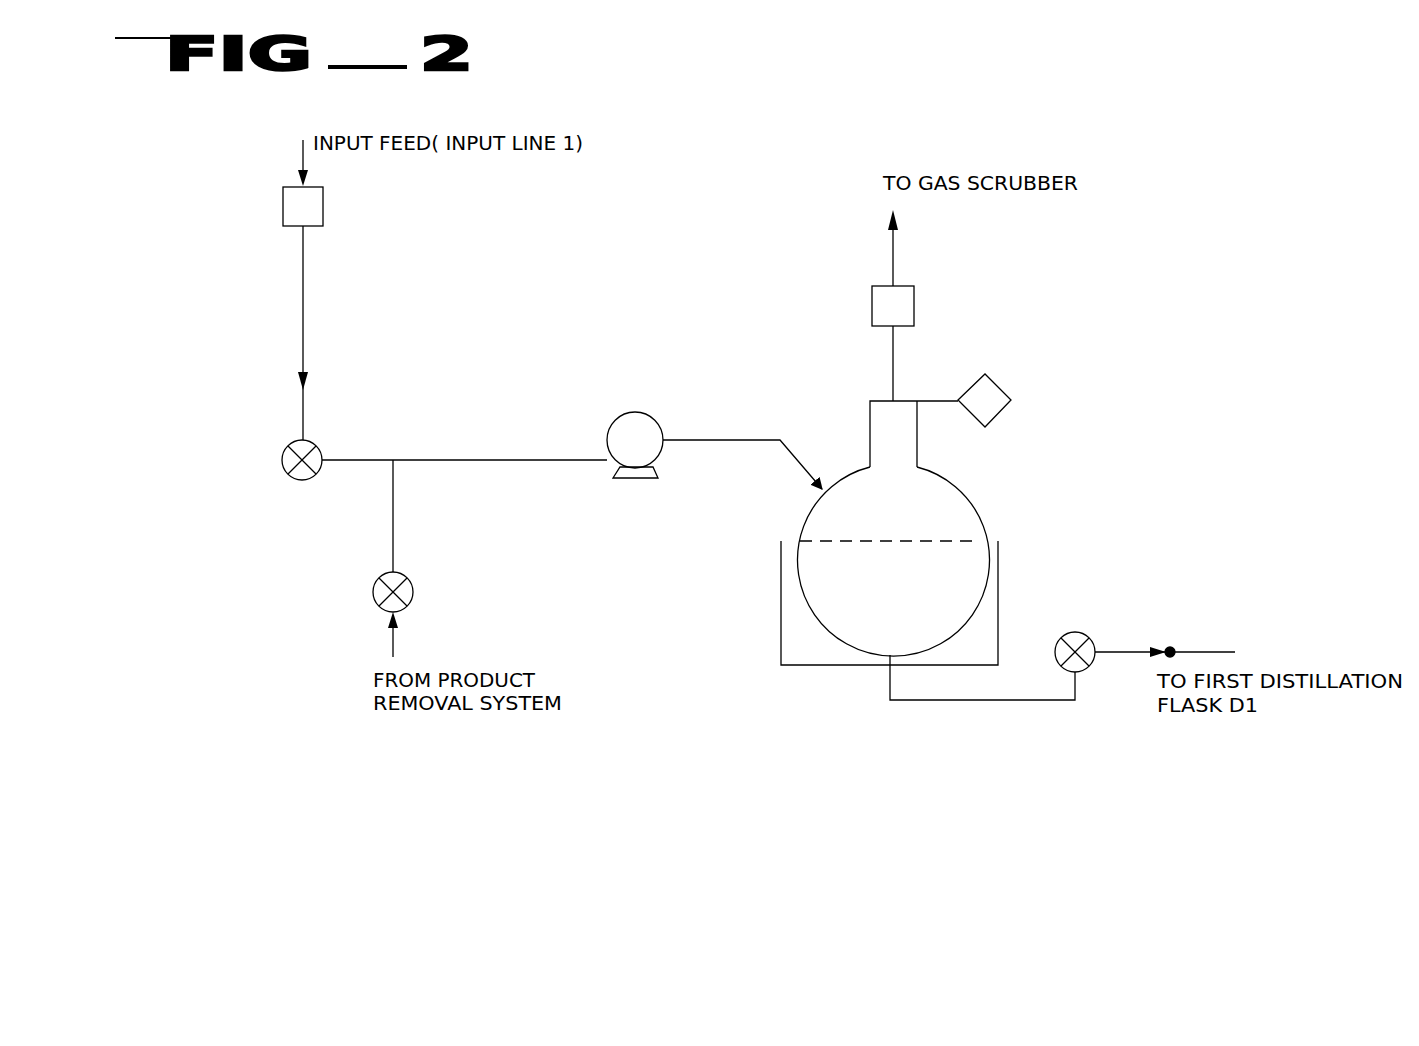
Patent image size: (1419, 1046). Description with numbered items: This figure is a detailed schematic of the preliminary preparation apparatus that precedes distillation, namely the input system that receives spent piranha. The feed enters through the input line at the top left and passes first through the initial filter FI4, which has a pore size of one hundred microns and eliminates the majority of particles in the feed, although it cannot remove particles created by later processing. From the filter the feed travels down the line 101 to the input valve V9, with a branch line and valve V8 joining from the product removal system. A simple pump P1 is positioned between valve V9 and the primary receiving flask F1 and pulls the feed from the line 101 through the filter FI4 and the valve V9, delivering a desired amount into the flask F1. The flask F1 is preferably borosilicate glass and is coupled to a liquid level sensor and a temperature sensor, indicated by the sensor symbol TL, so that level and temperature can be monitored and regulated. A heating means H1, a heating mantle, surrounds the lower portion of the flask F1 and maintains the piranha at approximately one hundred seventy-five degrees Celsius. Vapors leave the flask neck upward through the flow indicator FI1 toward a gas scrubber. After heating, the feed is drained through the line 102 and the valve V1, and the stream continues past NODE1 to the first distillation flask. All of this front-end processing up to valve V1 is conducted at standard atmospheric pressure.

The line 101 is at (305, 356).
The line 102 is at (1020, 703).
The initial filter FI4 is at (329, 206).
The flow indicator FI1 is at (917, 306).
The input valve V9 is at (302, 474).
The valve V8 is at (411, 592).
The valve V1 is at (1075, 637).
The pump P1 is at (635, 445).
The primary receiving flask F1 is at (894, 528).
The heating means H1 is at (889, 603).
The temperature/level sensor TL is at (984, 400).
The node 1 NODE1 is at (1170, 646).